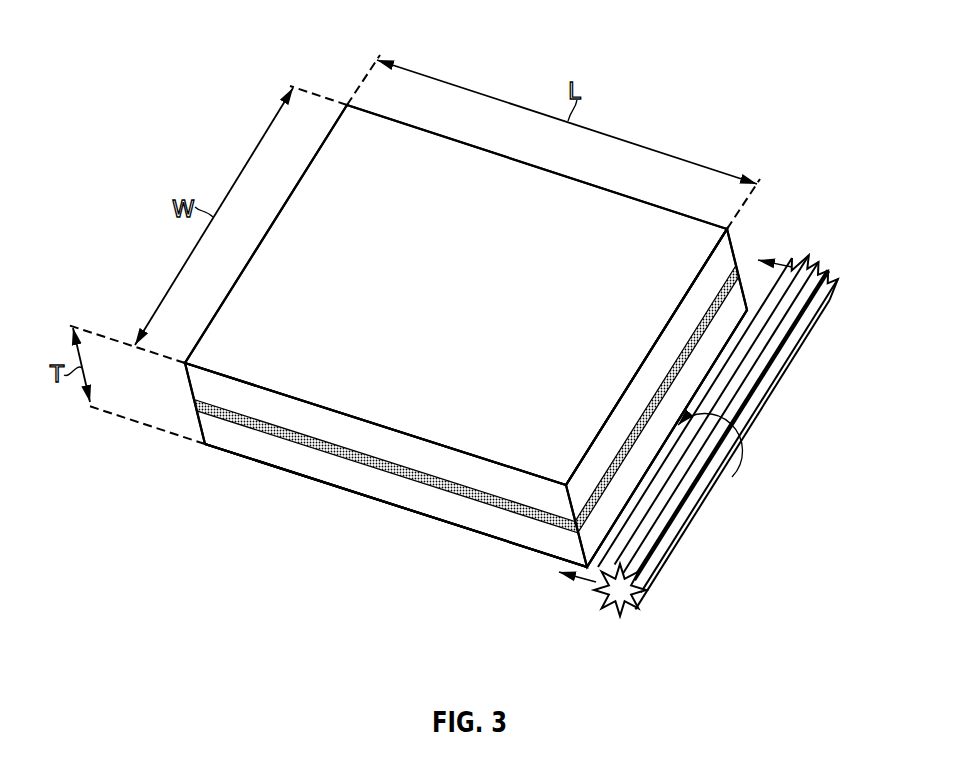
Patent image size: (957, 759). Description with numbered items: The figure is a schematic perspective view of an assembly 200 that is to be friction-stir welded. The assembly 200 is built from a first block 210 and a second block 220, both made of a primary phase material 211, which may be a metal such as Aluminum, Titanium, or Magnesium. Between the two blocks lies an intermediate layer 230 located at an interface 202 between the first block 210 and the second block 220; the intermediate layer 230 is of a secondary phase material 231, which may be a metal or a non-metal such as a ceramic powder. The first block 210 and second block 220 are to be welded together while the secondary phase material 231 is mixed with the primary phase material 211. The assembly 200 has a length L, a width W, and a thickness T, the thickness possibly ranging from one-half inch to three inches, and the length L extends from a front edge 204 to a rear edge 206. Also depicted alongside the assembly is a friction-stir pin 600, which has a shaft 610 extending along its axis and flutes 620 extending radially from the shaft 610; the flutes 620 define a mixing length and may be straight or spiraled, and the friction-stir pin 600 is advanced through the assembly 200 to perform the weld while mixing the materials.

The assembly 200 is at (309, 48).
The interface 202 is at (187, 403).
The front edge 204 is at (760, 236).
The rear edge 206 is at (158, 452).
The first block 210 is at (530, 165).
The primary phase material 211 is at (433, 165).
The second block 220 is at (388, 504).
The intermediate layer 230 is at (285, 434).
The secondary phase material 231 is at (328, 448).
The friction-stir pin 600 is at (698, 479).
The shaft 610 is at (620, 615).
The flutes 620 is at (638, 608).